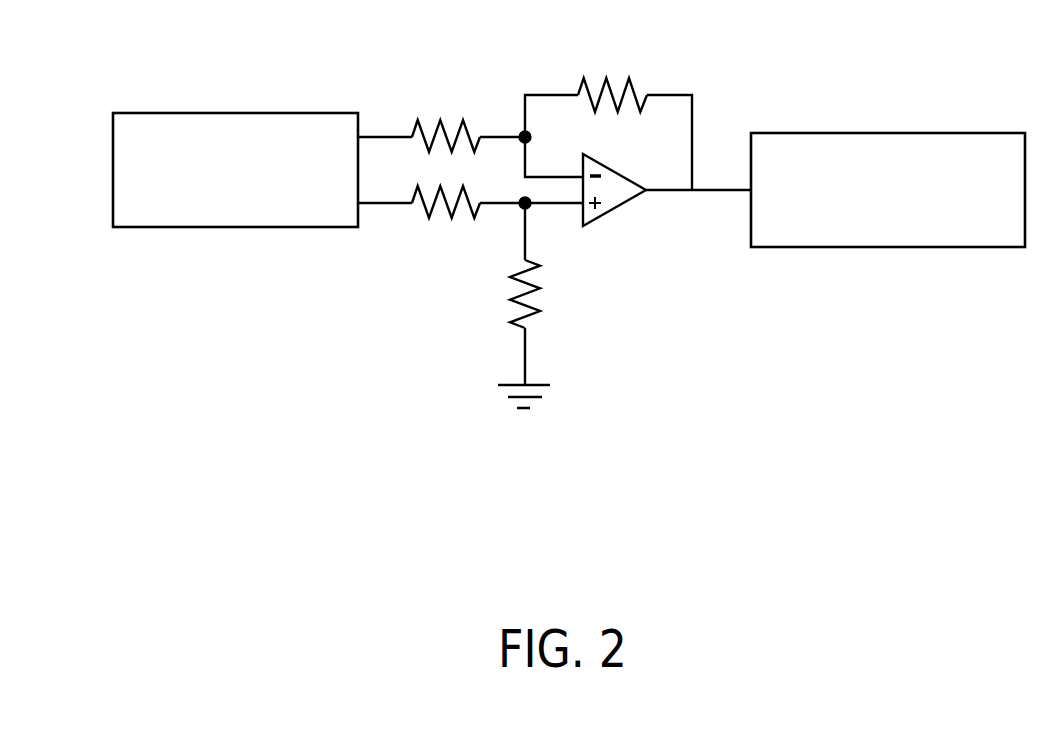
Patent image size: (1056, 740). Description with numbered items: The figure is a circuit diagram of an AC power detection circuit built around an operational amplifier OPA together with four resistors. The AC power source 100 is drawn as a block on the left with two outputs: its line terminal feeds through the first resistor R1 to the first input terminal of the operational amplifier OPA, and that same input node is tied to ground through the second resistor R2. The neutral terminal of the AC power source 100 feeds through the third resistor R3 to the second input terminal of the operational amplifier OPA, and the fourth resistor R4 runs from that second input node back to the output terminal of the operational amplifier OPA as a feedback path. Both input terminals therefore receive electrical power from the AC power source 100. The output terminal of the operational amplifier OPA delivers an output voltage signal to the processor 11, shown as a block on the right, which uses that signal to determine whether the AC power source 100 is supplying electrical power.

The AC power source 100 is at (212, 113).
The processor 11 is at (902, 133).
The first resistor R1 is at (446, 221).
The second resistor R2 is at (551, 294).
The third resistor R3 is at (446, 117).
The fourth resistor R4 is at (612, 77).
The operational amplifier OPA is at (618, 206).